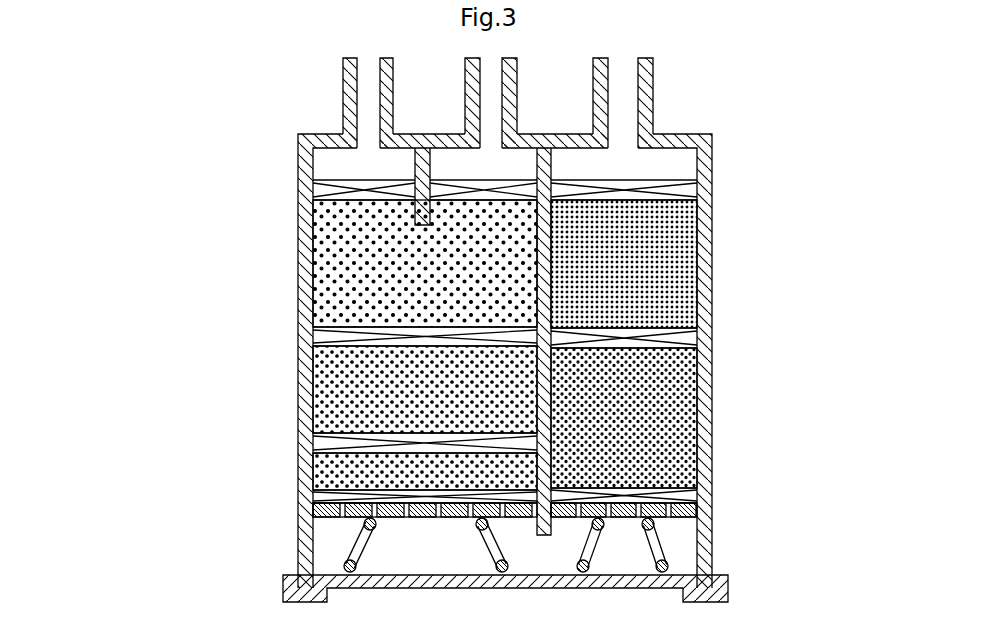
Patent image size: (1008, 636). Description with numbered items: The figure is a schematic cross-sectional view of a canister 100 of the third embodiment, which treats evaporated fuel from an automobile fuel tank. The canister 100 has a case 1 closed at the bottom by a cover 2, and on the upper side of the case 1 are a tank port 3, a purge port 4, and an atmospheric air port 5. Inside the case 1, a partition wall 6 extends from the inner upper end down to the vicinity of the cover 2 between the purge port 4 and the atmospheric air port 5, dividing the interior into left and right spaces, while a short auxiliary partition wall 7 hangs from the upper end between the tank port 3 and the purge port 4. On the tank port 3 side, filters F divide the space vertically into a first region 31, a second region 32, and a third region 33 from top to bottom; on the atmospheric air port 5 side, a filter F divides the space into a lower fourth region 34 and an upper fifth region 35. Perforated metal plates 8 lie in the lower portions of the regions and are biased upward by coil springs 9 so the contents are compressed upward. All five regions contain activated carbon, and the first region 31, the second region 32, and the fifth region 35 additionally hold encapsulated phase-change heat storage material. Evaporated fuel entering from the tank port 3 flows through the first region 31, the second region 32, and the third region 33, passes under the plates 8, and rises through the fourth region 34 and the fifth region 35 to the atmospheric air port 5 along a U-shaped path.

The canister 100 is at (222, 110).
The case 1 is at (305, 212).
The cover 2 is at (445, 580).
The tank port 3 is at (352, 82).
The purge port 4 is at (476, 82).
The atmospheric air port 5 is at (601, 82).
The partition wall 6 is at (548, 160).
The auxiliary partition wall 7 is at (420, 160).
The plate 8 is at (690, 510).
The coil spring 9 is at (508, 568).
The first region 31 is at (340, 268).
The second region 32 is at (340, 385).
The third region 33 is at (330, 470).
The fourth region 34 is at (672, 412).
The fifth region 35 is at (678, 252).
The filter F is at (333, 183).